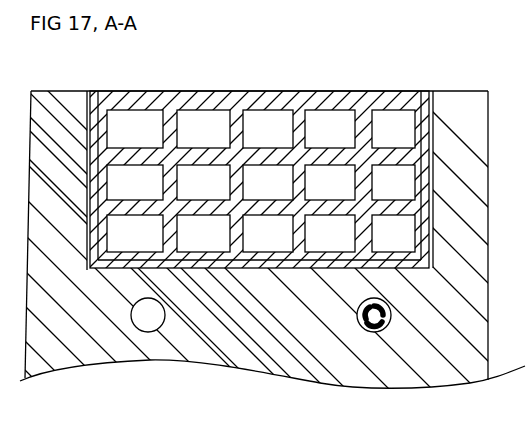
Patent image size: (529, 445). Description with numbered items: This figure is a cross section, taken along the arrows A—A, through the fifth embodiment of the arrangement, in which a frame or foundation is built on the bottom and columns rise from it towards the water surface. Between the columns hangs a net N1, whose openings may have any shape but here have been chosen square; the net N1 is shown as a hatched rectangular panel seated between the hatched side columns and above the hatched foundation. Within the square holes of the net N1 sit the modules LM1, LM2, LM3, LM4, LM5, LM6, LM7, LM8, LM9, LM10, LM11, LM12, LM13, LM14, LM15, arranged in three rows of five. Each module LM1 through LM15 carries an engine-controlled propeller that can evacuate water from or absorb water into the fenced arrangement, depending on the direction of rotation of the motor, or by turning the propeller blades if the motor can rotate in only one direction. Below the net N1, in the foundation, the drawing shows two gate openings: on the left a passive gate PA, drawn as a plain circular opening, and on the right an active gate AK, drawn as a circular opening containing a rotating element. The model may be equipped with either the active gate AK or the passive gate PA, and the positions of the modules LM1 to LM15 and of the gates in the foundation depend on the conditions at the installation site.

The module LM1 is at (135, 130).
The module LM2 is at (203, 130).
The module LM3 is at (268, 130).
The module LM4 is at (330, 130).
The module LM5 is at (393, 130).
The module LM6 is at (135, 184).
The module LM7 is at (203, 184).
The module LM8 is at (268, 184).
The module LM9 is at (330, 184).
The module LM10 is at (393, 184).
The module LM11 is at (135, 236).
The module LM12 is at (203, 236).
The module LM13 is at (268, 236).
The module LM14 is at (330, 236).
The module LM15 is at (393, 236).
The net N1 is at (379, 91).
The passive gate PA is at (146, 332).
The active gate AK is at (372, 332).